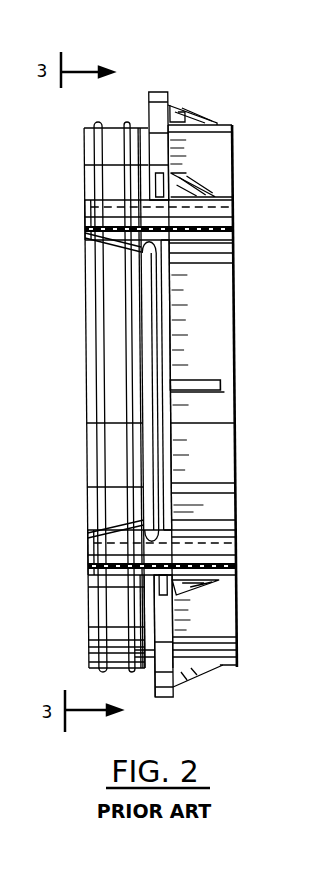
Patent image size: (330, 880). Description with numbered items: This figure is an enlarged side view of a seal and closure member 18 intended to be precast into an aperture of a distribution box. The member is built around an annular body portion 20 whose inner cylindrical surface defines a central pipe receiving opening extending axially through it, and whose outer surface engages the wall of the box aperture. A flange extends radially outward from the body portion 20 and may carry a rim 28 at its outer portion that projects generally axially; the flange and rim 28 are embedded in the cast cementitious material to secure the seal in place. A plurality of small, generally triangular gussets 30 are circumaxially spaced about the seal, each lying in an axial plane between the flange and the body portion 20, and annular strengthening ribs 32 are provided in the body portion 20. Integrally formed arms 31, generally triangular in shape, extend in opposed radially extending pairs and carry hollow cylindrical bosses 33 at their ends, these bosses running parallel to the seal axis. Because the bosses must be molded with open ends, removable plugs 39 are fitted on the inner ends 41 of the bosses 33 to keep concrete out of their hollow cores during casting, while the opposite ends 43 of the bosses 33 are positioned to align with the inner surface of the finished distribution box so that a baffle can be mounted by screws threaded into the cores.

The seal end closure member 18 is at (82, 257).
The annular body portion 20 is at (141, 120).
The rim 28 is at (158, 91).
The gusset 30 is at (201, 122).
The arm 31 is at (165, 313).
The annular strengthening rib 32 is at (102, 456).
The hollow cylindrical boss 33 is at (218, 240).
The removable plug 39 is at (89, 222).
The inner end of boss 41 is at (108, 214).
The opposite end of boss 43 is at (222, 217).